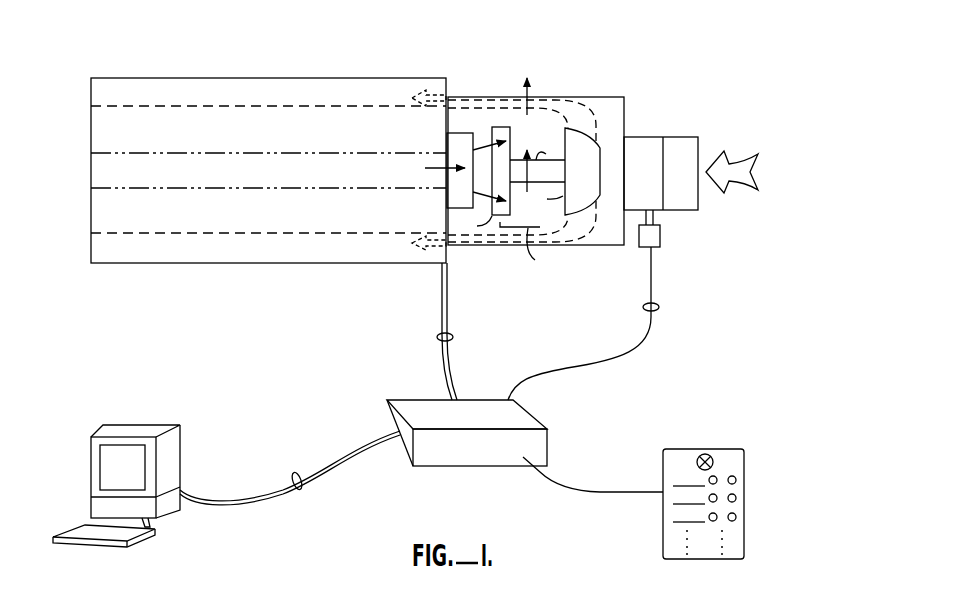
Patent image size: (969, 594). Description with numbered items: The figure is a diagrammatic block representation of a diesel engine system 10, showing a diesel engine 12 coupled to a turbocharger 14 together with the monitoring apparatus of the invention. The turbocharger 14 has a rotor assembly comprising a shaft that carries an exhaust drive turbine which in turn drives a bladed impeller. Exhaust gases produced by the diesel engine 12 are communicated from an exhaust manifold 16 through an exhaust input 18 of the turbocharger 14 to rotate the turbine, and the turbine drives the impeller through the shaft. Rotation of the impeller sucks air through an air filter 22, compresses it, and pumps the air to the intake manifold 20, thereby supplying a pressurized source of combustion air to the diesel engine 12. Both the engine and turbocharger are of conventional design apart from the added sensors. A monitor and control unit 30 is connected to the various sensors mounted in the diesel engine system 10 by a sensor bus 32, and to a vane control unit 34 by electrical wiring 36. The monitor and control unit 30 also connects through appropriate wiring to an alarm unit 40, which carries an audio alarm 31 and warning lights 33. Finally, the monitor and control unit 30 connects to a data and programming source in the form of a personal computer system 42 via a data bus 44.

The diesel engine system 10 is at (449, 48).
The diesel engine 12 is at (240, 77).
The turbocharger 14 is at (600, 97).
The exhaust manifold 16 is at (100, 169).
The exhaust input 18 is at (457, 134).
The intake manifold 20 is at (100, 98).
The air filter 22 is at (690, 137).
The monitor and control unit 30 is at (539, 417).
The audio alarm 31 is at (700, 455).
The sensor bus 32 is at (437, 337).
The warning lights 33 is at (736, 517).
The vane control unit 34 is at (661, 236).
The electrical wiring 36 is at (660, 307).
The alarm unit 40 is at (718, 449).
The personal computer system 42 is at (120, 423).
The data bus 44 is at (290, 471).